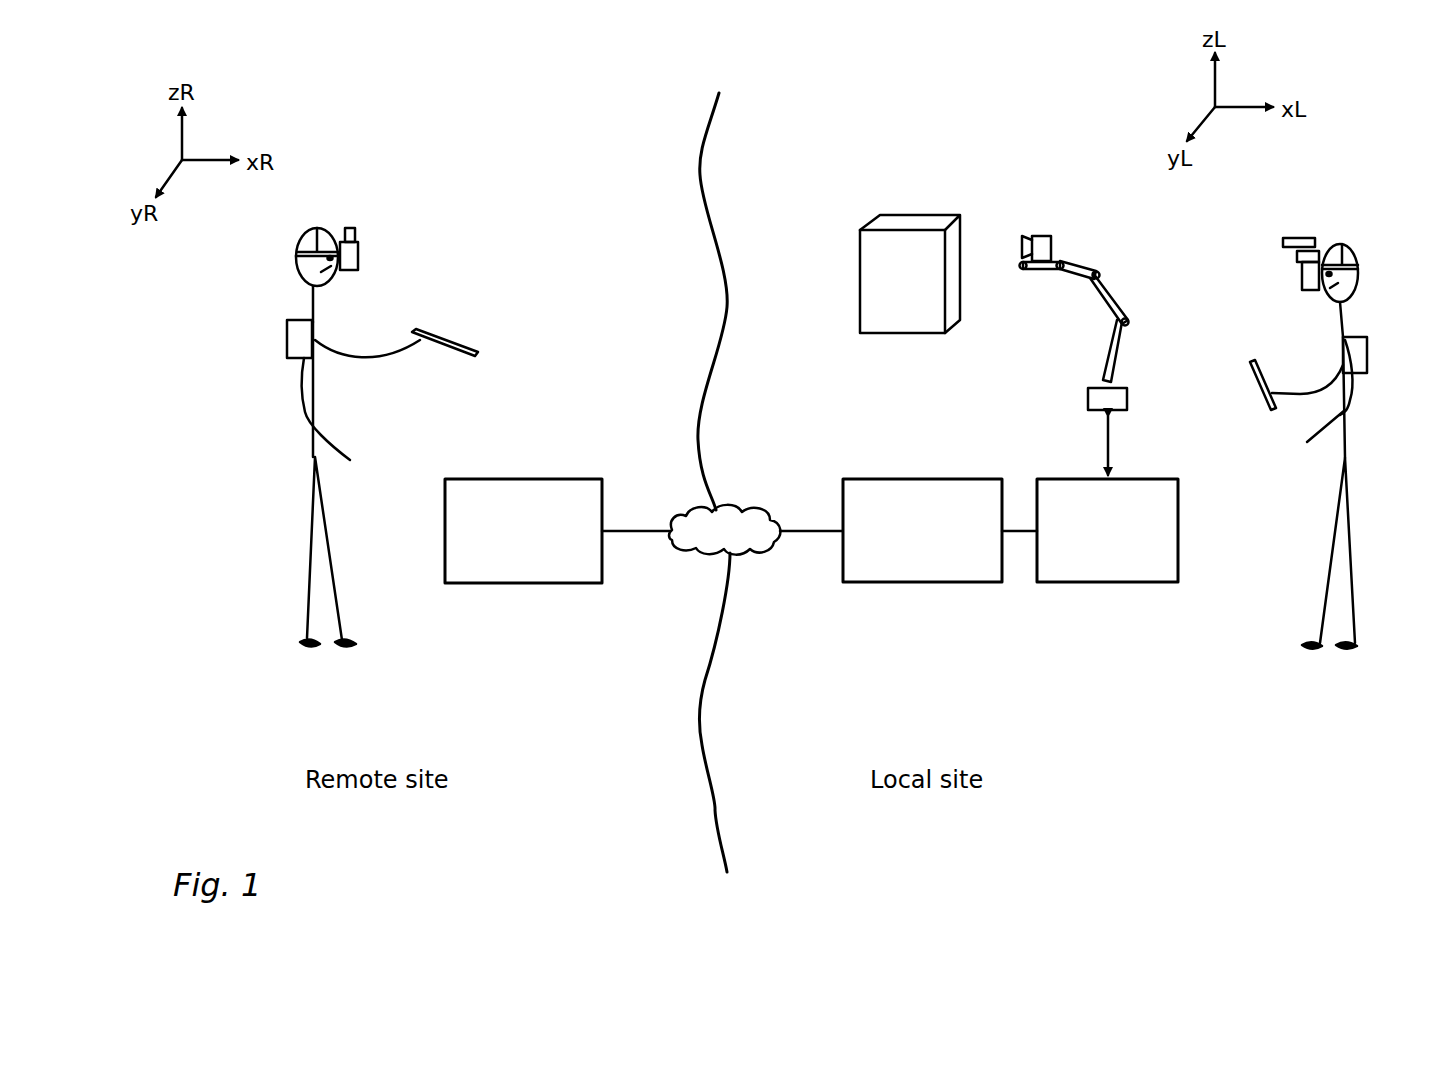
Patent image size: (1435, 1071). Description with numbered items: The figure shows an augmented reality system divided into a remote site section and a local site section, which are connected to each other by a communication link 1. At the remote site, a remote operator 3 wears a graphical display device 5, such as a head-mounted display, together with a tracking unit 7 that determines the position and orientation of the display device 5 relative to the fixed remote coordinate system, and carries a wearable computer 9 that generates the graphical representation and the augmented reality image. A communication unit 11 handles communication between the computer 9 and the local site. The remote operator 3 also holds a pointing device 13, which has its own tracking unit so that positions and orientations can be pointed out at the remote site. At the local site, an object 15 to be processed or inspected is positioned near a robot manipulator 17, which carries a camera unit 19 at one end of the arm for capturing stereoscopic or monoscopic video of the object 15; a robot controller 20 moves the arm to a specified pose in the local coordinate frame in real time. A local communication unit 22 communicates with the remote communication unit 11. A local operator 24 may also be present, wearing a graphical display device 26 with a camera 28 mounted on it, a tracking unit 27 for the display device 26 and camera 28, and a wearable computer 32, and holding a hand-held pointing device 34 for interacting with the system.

The communication link 1 is at (813, 533).
The remote operator 3 is at (305, 452).
The graphical display device 5 is at (353, 252).
The tracking unit 7 is at (353, 232).
The computer 9 is at (298, 337).
The communication unit 11 is at (553, 500).
The pointing device 13 is at (448, 340).
The object 15 is at (876, 278).
The robot manipulator 17 is at (1105, 305).
The camera unit 19 is at (1038, 245).
The robot controller 20 is at (1130, 565).
The communication unit 22 is at (960, 565).
The local operator 24 is at (1348, 418).
The graphical display device 26 is at (1302, 276).
The tracking unit 27 is at (1297, 257).
The camera 28 is at (1296, 242).
The computer 32 is at (1358, 353).
The hand-held pointing device 34 is at (1253, 377).